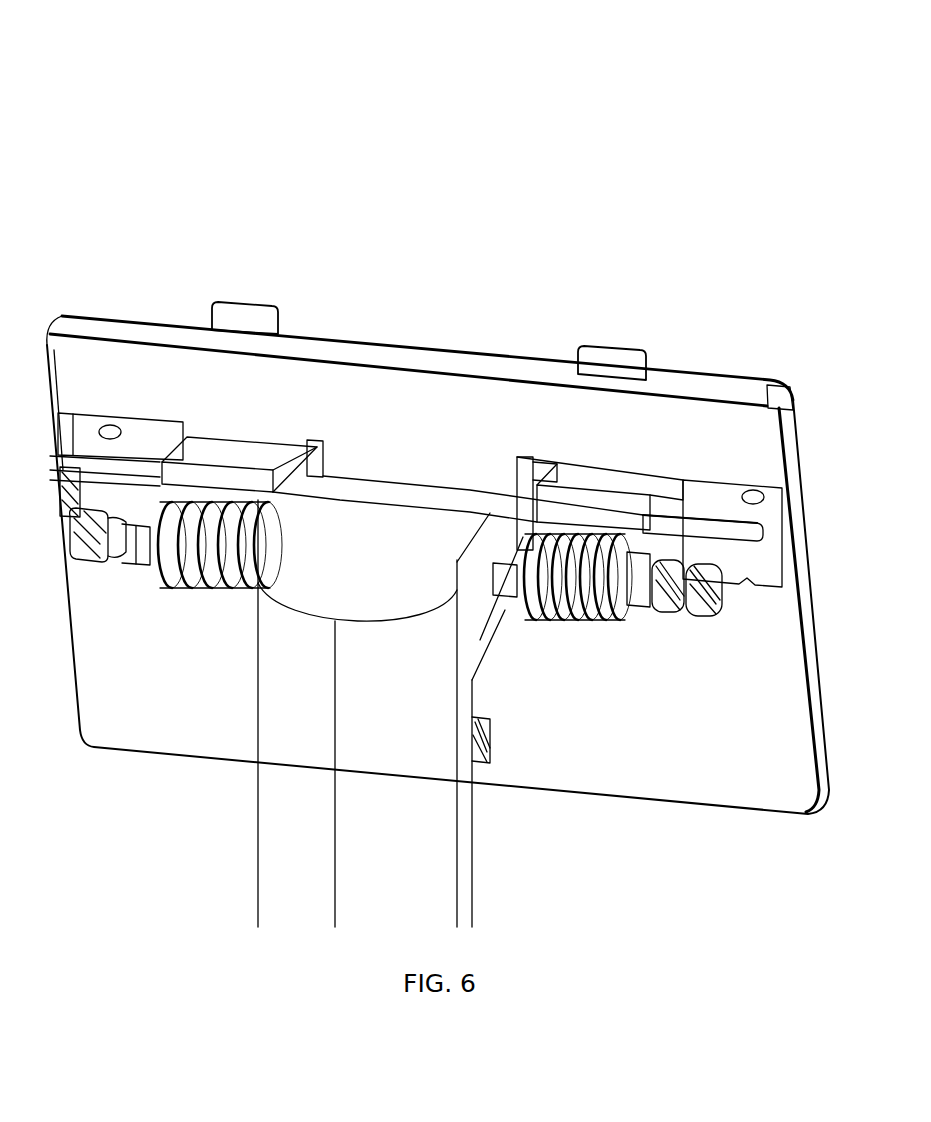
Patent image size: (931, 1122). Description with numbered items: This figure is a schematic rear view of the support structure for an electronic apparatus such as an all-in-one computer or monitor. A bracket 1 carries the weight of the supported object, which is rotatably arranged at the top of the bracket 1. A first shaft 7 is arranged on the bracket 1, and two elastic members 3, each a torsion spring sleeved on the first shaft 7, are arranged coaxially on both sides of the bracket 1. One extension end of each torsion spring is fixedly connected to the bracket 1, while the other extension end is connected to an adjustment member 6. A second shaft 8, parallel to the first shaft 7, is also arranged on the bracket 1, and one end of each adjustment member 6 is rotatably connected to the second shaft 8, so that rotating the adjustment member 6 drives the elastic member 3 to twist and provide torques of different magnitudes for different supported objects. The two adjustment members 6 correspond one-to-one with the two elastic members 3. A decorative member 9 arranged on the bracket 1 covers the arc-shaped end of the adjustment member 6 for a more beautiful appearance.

The bracket 1 is at (252, 859).
The elastic member 3 is at (190, 592).
The adjustment member 6 is at (608, 496).
The first shaft 7 is at (712, 505).
The second shaft 8 is at (138, 508).
The decorative member 9 is at (746, 820).